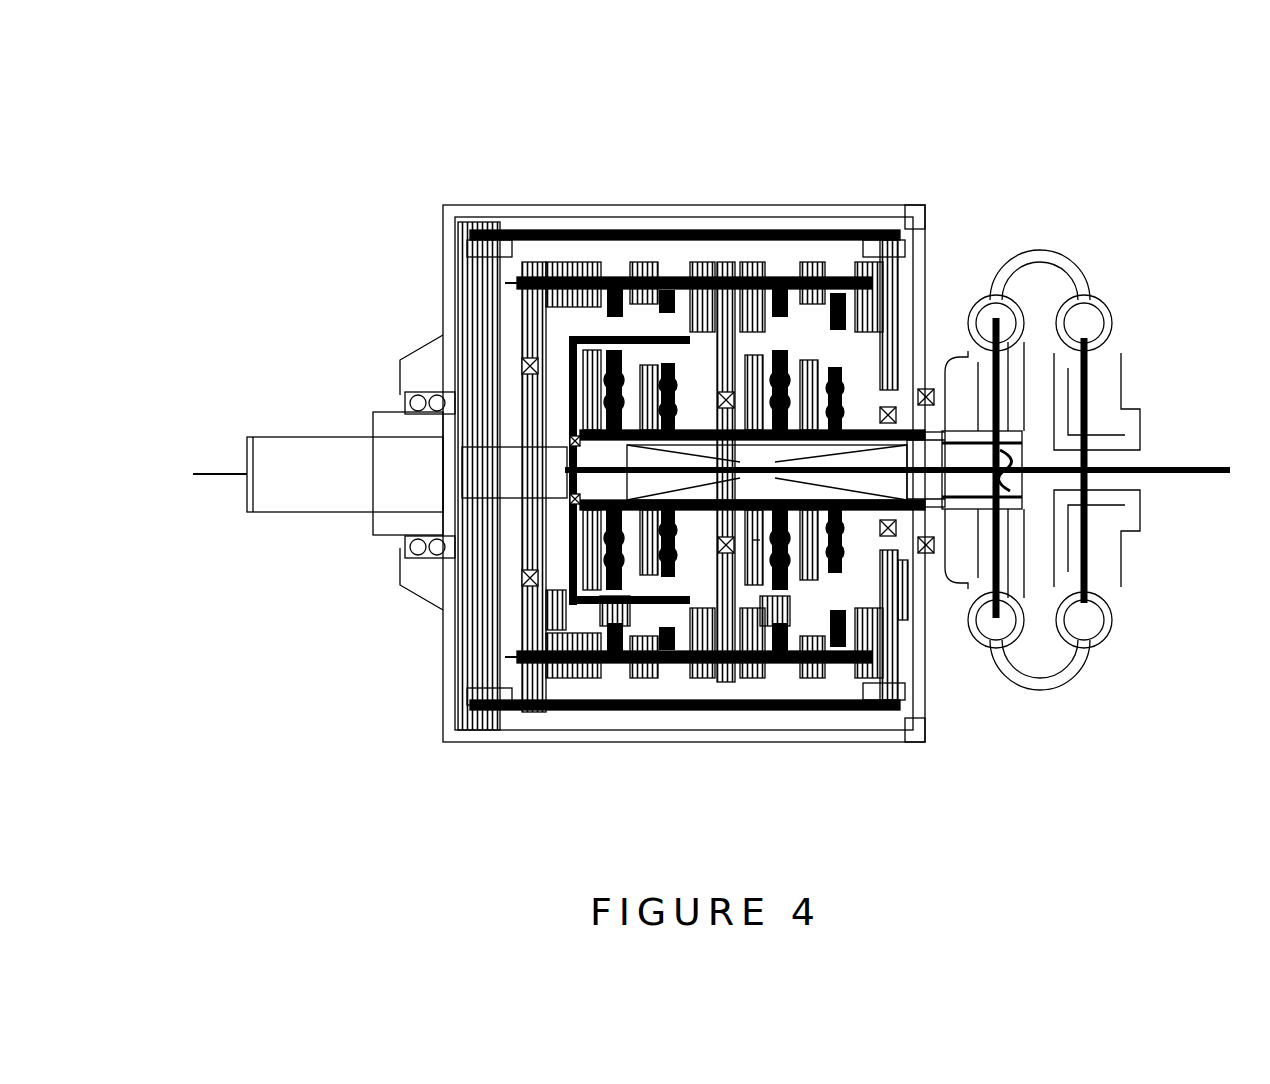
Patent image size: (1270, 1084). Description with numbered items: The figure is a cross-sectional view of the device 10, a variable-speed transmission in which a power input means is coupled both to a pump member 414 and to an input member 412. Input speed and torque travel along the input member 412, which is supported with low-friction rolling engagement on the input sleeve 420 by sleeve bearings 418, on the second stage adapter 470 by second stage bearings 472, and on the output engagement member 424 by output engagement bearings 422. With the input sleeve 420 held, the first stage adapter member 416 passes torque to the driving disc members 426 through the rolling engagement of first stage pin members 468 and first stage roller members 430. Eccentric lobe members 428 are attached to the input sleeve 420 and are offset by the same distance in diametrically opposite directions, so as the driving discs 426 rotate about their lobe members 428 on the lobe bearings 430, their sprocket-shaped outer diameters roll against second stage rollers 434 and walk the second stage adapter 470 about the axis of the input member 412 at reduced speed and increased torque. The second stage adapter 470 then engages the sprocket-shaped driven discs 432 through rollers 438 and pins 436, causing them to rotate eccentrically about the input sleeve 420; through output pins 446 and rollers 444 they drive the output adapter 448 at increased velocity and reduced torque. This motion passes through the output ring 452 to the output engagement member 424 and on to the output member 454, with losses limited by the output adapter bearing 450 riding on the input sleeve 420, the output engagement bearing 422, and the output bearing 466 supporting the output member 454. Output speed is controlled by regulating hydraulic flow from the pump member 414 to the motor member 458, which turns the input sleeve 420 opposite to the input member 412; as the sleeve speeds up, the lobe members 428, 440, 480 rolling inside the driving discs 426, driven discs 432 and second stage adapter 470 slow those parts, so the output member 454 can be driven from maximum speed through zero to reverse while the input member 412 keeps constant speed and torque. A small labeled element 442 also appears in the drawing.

The device 10 is at (348, 118).
The input member 412 is at (1140, 470).
The pump member 414 is at (1105, 305).
The first stage adapter member 416 is at (530, 420).
The sleeve bearings 418 is at (846, 470).
The input sleeve 420 is at (945, 435).
The output engagement bearings 422 is at (453, 515).
The output engagement member 424 is at (480, 647).
The driving disc members 426 is at (645, 675).
The eccentric lobe members 428 is at (630, 470).
The first stage roller members 430 is at (612, 287).
The driven discs 432 is at (850, 270).
The second stage rollers 434 is at (668, 268).
The pins 436 is at (905, 660).
The rollers 438 is at (830, 273).
The lobe member 440 is at (794, 470).
The magnet 442 is at (833, 562).
The rollers 444 is at (790, 650).
The output pins 446 is at (930, 450).
The output adapter 448 is at (897, 630).
The output adapter bearing 450 is at (930, 700).
The output ring 452 is at (795, 708).
The output member 454 is at (275, 483).
The motor member 458 is at (995, 252).
The output bearing 466 is at (410, 398).
The first stage pin members 468 is at (562, 337).
The second stage adapter 470 is at (550, 673).
The second stage bearings 472 is at (529, 580).
The lobe member 480 is at (753, 543).